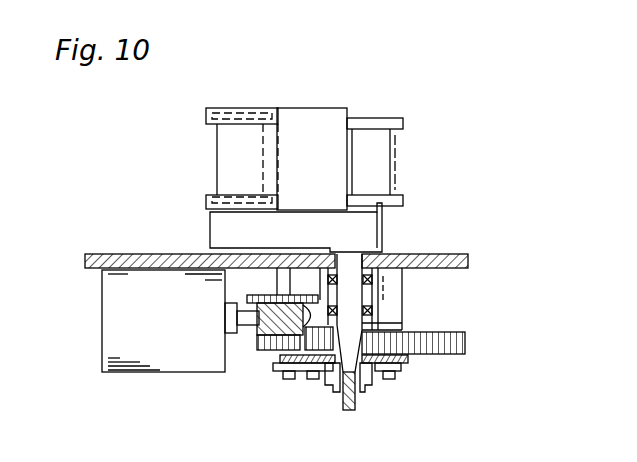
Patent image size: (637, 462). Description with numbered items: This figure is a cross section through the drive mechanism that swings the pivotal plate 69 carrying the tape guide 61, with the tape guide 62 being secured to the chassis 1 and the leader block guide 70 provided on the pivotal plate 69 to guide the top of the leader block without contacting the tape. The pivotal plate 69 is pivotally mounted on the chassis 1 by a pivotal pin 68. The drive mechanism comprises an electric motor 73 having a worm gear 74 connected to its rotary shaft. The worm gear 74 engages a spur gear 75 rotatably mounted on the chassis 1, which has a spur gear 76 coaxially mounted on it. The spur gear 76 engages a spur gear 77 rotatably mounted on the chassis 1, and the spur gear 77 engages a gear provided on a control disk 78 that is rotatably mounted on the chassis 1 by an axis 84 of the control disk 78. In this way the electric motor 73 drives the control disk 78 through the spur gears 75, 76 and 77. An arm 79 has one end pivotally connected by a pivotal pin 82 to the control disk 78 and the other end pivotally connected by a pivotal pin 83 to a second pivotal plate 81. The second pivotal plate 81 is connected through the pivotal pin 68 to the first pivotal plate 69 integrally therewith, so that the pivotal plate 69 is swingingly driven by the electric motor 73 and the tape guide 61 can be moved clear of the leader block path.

The chassis 1 is at (424, 254).
The tape guide 61 is at (220, 153).
The tape guide 62 is at (388, 158).
The pivotal pin 68 is at (350, 410).
The pivotal plate 69 is at (378, 222).
The leader block guide 70 is at (294, 138).
The electric motor 73 is at (185, 364).
The worm gear 74 is at (232, 318).
The spur gear 75 is at (258, 296).
The spur gear 76 is at (262, 346).
The spur gear 77 is at (395, 325).
The control disk 78 is at (466, 343).
The arm 79 is at (313, 372).
The second pivotal plate 81 is at (405, 363).
The pivotal pin 82 is at (388, 372).
The pivotal pin 83 is at (292, 372).
The axis 84 is at (395, 295).